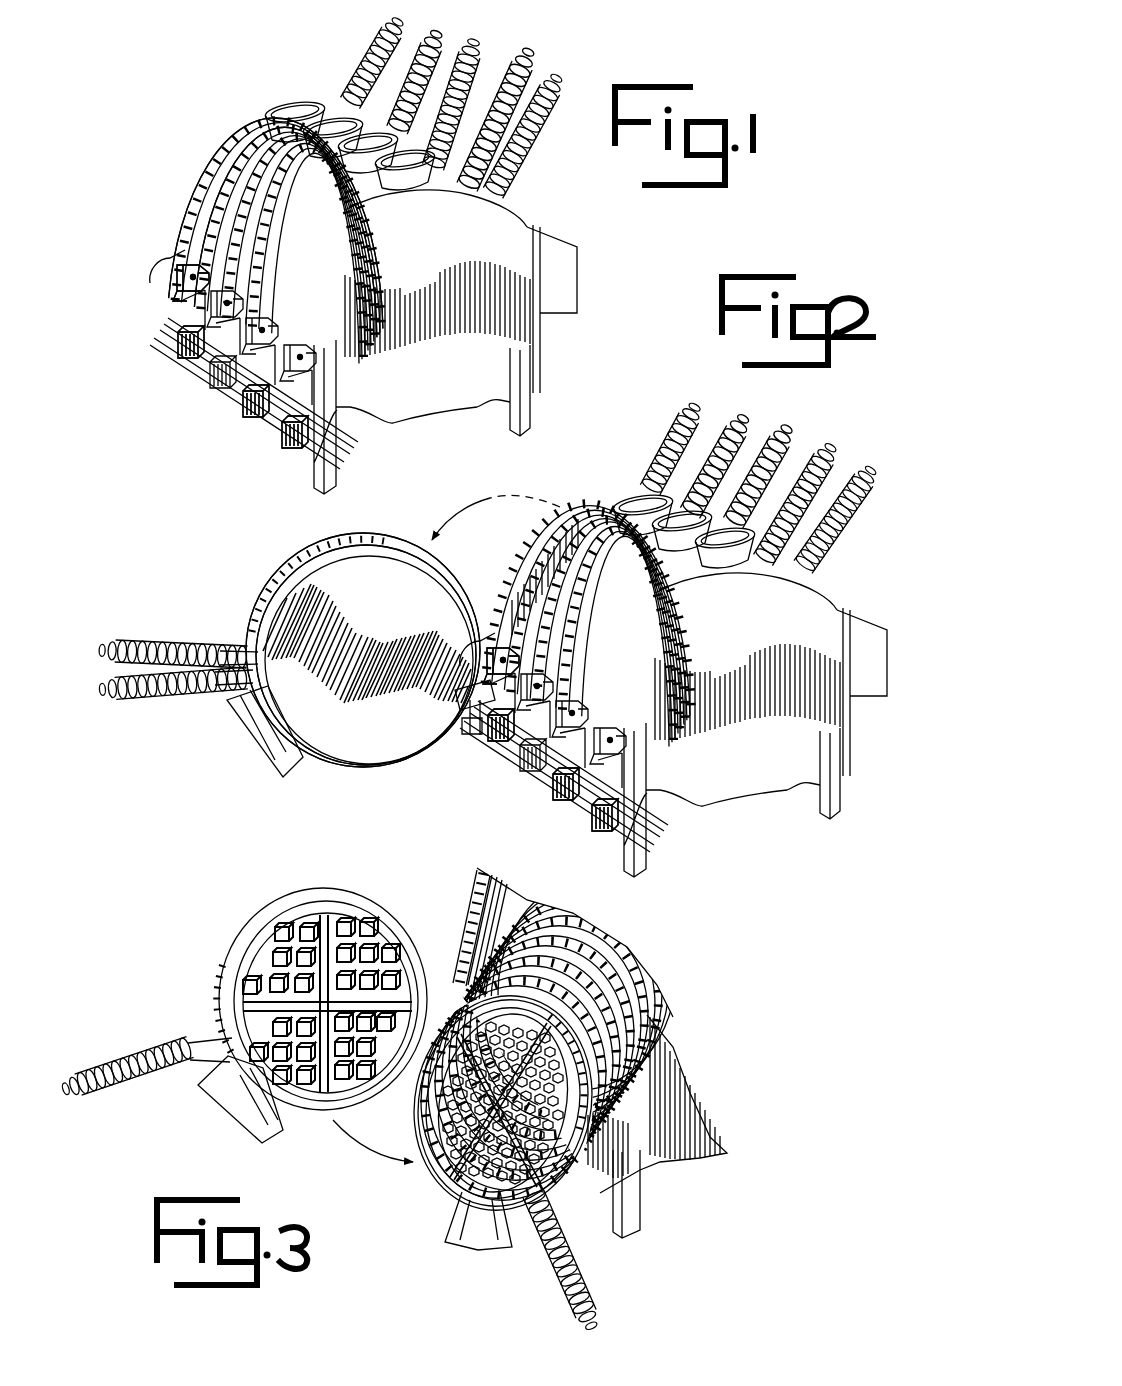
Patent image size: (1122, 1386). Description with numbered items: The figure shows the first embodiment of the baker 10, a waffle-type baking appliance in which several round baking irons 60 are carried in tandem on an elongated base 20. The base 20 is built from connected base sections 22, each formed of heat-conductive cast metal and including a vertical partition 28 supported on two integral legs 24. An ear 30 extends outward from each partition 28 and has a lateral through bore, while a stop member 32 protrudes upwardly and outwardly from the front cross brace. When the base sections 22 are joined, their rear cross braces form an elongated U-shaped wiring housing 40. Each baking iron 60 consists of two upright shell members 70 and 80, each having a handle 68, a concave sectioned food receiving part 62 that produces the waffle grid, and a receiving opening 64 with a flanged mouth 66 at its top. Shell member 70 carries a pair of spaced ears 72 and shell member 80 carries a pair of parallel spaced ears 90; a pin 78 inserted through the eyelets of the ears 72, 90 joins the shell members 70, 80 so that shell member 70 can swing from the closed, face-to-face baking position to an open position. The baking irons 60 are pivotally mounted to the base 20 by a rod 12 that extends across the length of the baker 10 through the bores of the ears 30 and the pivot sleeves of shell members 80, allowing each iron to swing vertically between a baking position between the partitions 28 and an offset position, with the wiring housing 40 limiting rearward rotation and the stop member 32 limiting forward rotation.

In FIG. 1, the baker 10 is at (148, 183).
In FIG. 2, the baker 10 is at (837, 833).
In FIG. 1, the rod 12 is at (313, 415).
In FIG. 2, the rod 12 is at (653, 790).
In FIG. 3, the rod 12 is at (603, 1173).
In FIG. 1, the base 20 is at (432, 423).
In FIG. 2, the base 20 is at (747, 800).
In FIG. 3, the base 20 is at (720, 1170).
In FIG. 1, the base section 22 is at (273, 457).
In FIG. 2, the base section 22 is at (637, 837).
In FIG. 1, the legs 24 is at (530, 403).
In FIG. 2, the legs 24 is at (837, 807).
In FIG. 3, the legs 24 is at (640, 1213).
In FIG. 1, the vertical partition 28 is at (520, 273).
In FIG. 2, the vertical partition 28 is at (797, 667).
In FIG. 1, the ear 30 is at (260, 430).
In FIG. 2, the ear 30 is at (630, 770).
In FIG. 3, the ear 30 is at (600, 1123).
In FIG. 1, the stop member 32 is at (273, 430).
In FIG. 2, the stop member 32 is at (577, 810).
In FIG. 1, the wiring housing 40 is at (577, 252).
In FIG. 2, the wiring housing 40 is at (880, 633).
In FIG. 1, the baking iron 60 is at (227, 170).
In FIG. 2, the baking iron 60 is at (353, 767).
In FIG. 3, the baking iron 60 is at (502, 1103).
In FIG. 3, the food receiving part 62 is at (293, 957).
In FIG. 1, the receiving opening 64 is at (282, 93).
In FIG. 2, the receiving opening 64 is at (628, 492).
In FIG. 3, the receiving opening 64 is at (233, 1100).
In FIG. 1, the flanged mouth 66 is at (306, 99).
In FIG. 2, the flanged mouth 66 is at (253, 727).
In FIG. 3, the flanged mouth 66 is at (247, 1110).
In FIG. 1, the handle 68 is at (525, 128).
In FIG. 2, the handle 68 is at (850, 513).
In FIG. 3, the handle 68 is at (127, 1057).
In FIG. 1, the shell member 70 is at (212, 213).
In FIG. 2, the shell member 70 is at (297, 577).
In FIG. 3, the shell member 70 is at (587, 1050).
In FIG. 2, the ears 72 is at (463, 727).
In FIG. 1, the pin 78 is at (193, 278).
In FIG. 2, the pin 78 is at (477, 687).
In FIG. 1, the shell member 80 is at (203, 230).
In FIG. 2, the shell member 80 is at (260, 598).
In FIG. 3, the shell member 80 is at (233, 937).
In FIG. 2, the ears 90 is at (460, 717).